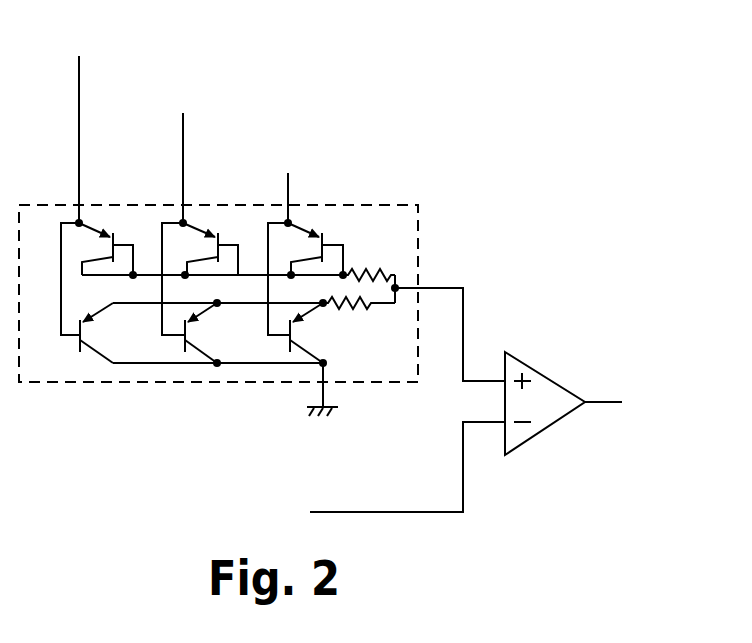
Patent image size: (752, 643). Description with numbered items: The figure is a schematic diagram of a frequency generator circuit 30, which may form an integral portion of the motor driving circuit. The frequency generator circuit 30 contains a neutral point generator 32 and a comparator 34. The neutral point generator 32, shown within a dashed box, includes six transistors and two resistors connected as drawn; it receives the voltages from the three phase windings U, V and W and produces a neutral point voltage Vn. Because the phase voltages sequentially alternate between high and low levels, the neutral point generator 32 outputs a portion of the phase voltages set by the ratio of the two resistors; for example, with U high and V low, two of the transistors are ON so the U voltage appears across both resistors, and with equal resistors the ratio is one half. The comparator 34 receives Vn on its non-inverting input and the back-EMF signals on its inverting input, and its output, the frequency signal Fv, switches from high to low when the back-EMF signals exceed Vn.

The frequency generator circuit 30 is at (325, 125).
The neutral point generator 32 is at (418, 229).
The comparator 34 is at (548, 377).